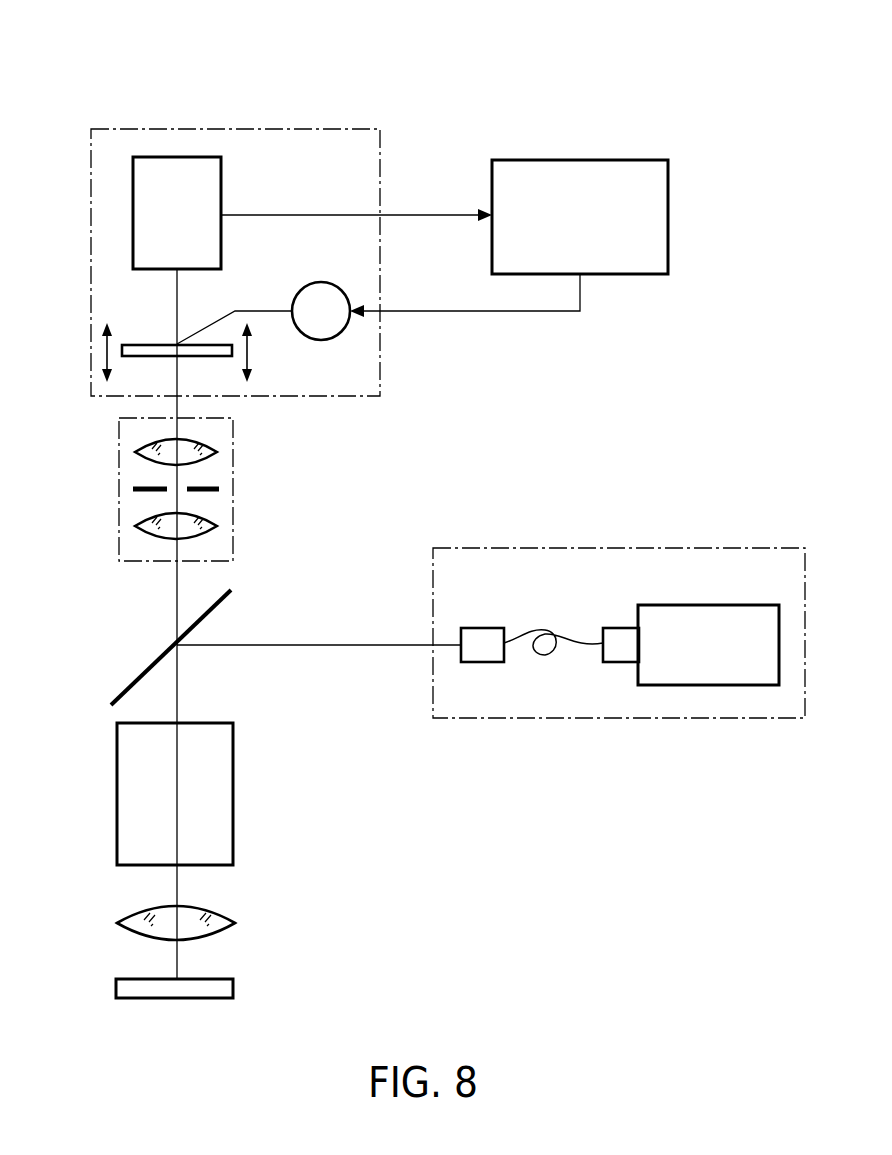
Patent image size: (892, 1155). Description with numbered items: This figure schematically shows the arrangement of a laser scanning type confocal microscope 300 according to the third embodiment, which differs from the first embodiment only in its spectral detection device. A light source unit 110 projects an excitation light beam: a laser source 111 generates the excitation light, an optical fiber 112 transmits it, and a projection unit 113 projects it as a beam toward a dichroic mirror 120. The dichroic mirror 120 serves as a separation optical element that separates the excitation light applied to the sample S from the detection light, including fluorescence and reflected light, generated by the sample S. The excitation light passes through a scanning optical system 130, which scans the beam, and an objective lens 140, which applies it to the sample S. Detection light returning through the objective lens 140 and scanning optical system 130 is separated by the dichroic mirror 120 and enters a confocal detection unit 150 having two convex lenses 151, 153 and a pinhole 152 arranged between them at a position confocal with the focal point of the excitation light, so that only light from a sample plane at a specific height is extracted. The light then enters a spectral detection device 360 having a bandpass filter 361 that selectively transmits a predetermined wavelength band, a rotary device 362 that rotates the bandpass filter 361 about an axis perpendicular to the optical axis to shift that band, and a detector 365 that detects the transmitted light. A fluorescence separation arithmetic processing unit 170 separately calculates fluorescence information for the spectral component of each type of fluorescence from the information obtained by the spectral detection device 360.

The laser scanning type confocal microscope 300 is at (88, 65).
The spectral detection device 360 is at (290, 128).
The detector 365 is at (222, 186).
The rotary device 362 is at (315, 283).
The bandpass filter 361 is at (150, 345).
The fluorescence separation arithmetic processing unit 170 is at (628, 160).
The confocal detection unit 150 is at (119, 490).
The convex lens 153 is at (215, 459).
The pinhole 152 is at (210, 491).
The convex lens 151 is at (215, 533).
The dichroic mirror 120 is at (130, 683).
The light source unit 110 is at (770, 548).
The laser source 111 is at (712, 605).
The optical fiber 112 is at (567, 638).
The projection unit 113 is at (485, 628).
The scanning optical system 130 is at (117, 786).
The objective lens 140 is at (118, 921).
The sample S is at (116, 988).